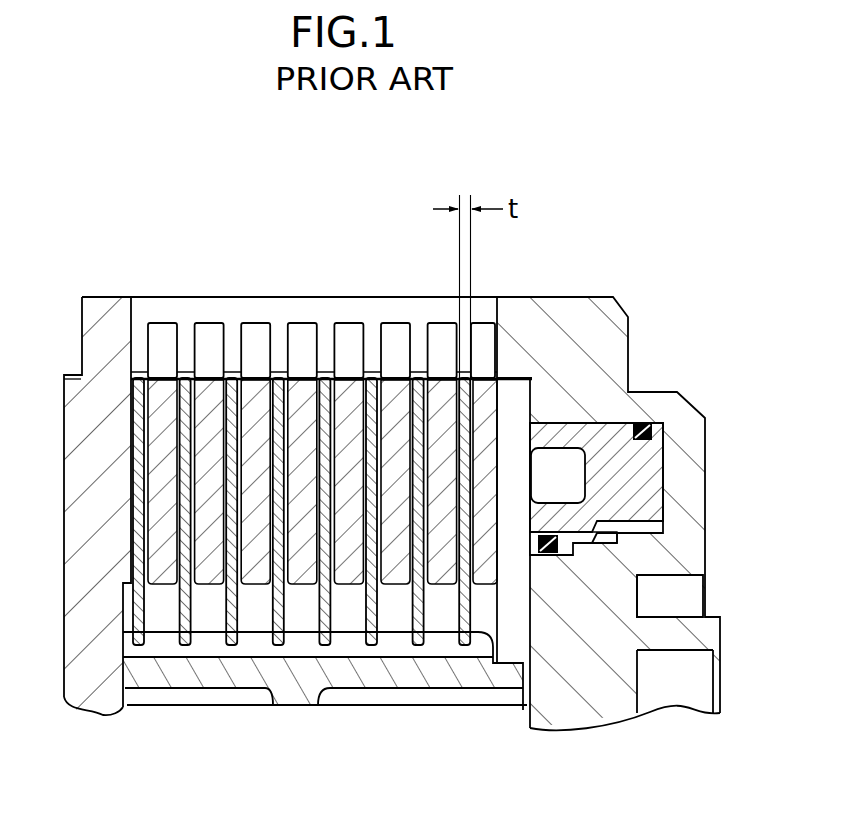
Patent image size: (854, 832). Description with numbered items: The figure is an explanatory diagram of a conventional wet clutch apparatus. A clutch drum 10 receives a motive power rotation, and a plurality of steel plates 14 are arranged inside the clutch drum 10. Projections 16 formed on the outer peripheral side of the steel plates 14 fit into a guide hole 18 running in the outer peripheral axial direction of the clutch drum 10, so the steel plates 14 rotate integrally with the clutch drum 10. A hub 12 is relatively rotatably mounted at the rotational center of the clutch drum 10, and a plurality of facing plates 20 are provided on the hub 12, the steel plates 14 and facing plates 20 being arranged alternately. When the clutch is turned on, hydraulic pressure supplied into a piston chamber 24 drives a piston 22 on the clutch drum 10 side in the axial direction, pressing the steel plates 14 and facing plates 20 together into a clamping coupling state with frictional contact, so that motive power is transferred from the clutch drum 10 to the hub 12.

The clutch drum 10 is at (577, 295).
The hub 12 is at (222, 666).
The steel plates 14 is at (162, 393).
The projections 16 is at (160, 333).
The guide hole 18 is at (138, 302).
The facing plates 20 is at (138, 645).
The piston 22 is at (642, 460).
The piston chamber 24 is at (653, 530).